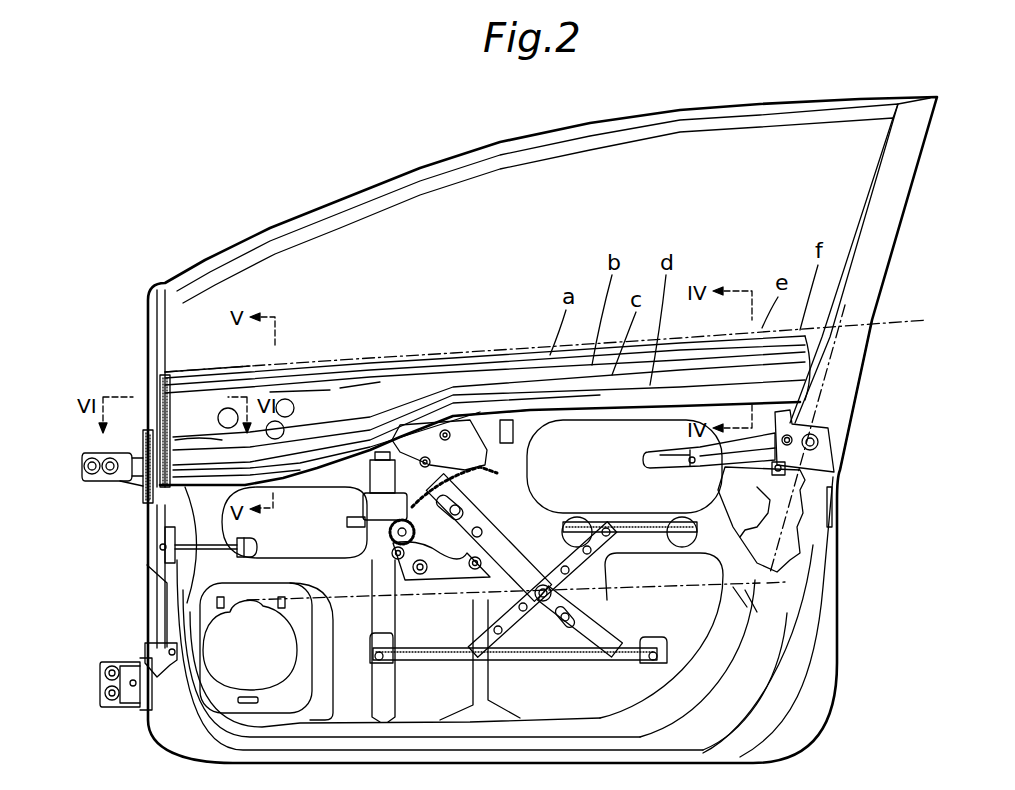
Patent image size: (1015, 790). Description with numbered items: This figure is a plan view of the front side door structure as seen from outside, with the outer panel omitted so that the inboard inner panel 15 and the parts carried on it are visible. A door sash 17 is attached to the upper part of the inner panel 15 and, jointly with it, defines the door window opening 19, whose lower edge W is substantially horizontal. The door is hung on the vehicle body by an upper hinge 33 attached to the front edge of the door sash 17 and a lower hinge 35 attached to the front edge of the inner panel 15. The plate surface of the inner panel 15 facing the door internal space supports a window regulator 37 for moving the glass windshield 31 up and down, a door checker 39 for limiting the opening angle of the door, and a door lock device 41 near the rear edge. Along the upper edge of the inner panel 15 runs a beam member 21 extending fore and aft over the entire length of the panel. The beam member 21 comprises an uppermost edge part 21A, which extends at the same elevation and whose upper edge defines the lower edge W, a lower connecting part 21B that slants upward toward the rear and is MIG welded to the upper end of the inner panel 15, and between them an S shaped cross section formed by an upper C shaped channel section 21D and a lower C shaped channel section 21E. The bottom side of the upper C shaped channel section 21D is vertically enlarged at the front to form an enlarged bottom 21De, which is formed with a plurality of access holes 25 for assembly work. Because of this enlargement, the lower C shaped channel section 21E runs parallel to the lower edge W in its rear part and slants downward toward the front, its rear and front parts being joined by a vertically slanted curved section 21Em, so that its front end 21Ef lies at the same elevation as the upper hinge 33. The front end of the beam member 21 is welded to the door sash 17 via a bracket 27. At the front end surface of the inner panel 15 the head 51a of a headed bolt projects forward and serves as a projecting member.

The inner panel 15 is at (773, 617).
The door sash 17 is at (331, 215).
The door window opening 19 is at (898, 190).
The beam member 21 is at (535, 335).
The uppermost edge part 21A is at (437, 355).
The lower connecting part 21B is at (480, 413).
The upper C shaped channel section 21D is at (388, 385).
The enlarged bottom 21De is at (292, 390).
The lower C shaped channel section 21E is at (247, 597).
The front end of the lower C shaped channel section 21Ef is at (140, 492).
The vertically slanted curved section 21Em is at (357, 433).
The access holes 25 is at (233, 437).
The bracket 27 is at (165, 390).
The glass windshield 31 is at (607, 590).
The upper hinge 33 is at (88, 480).
The lower hinge 35 is at (125, 708).
The window regulator 37 is at (487, 517).
The door checker 39 is at (190, 548).
The door lock device 41 is at (830, 420).
The head of the headed bolt 51a is at (137, 490).
The lower edge of the window opening W is at (905, 325).